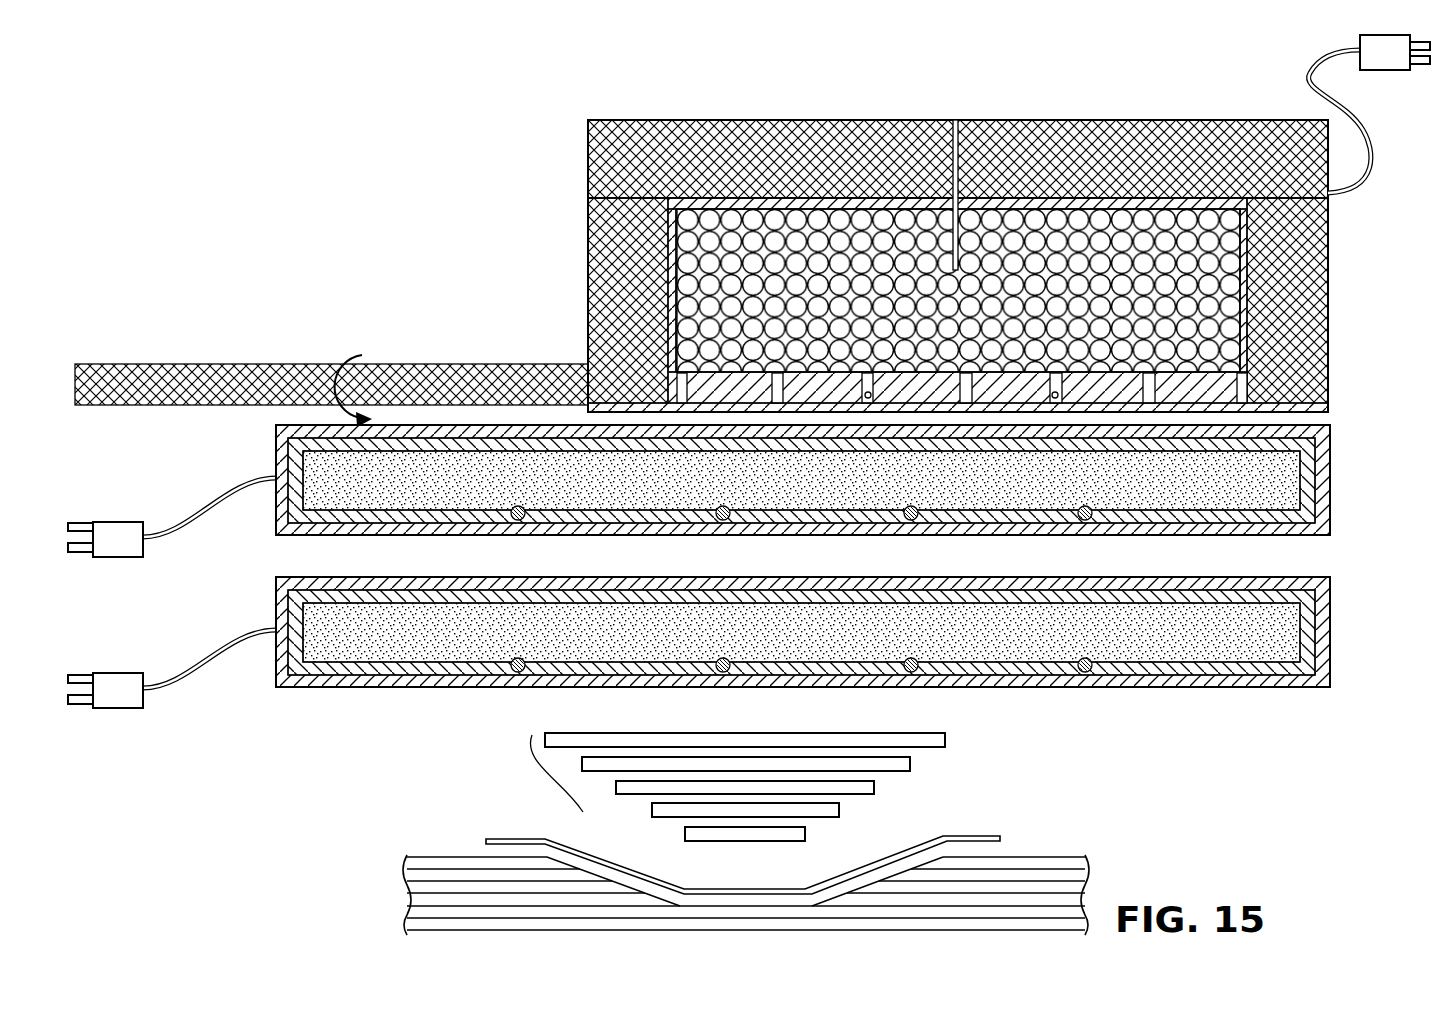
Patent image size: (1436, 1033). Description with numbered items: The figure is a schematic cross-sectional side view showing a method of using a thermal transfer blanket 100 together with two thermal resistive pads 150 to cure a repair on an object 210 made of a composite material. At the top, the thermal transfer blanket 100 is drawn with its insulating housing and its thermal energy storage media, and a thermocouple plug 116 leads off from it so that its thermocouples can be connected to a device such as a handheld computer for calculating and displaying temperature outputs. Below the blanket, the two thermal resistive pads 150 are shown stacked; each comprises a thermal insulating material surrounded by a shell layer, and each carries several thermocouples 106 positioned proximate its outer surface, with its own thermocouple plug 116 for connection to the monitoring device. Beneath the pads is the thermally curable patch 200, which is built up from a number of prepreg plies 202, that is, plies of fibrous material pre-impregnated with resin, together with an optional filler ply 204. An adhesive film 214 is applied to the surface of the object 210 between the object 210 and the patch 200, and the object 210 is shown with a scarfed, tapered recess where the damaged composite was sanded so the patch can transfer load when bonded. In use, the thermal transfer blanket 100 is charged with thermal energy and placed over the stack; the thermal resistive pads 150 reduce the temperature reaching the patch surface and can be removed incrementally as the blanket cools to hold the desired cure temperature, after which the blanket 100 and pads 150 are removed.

The thermal transfer blanket 100 is at (334, 74).
The thermocouple plug 116 is at (1380, 72).
The thermal resistive pad 150 is at (282, 452).
The thermocouple 106 is at (510, 515).
The prepreg ply 202 is at (945, 745).
The filler ply 204 is at (805, 838).
The thermally curable patch 200 is at (667, 858).
The adhesive film 214 is at (487, 839).
The object 210 is at (407, 880).